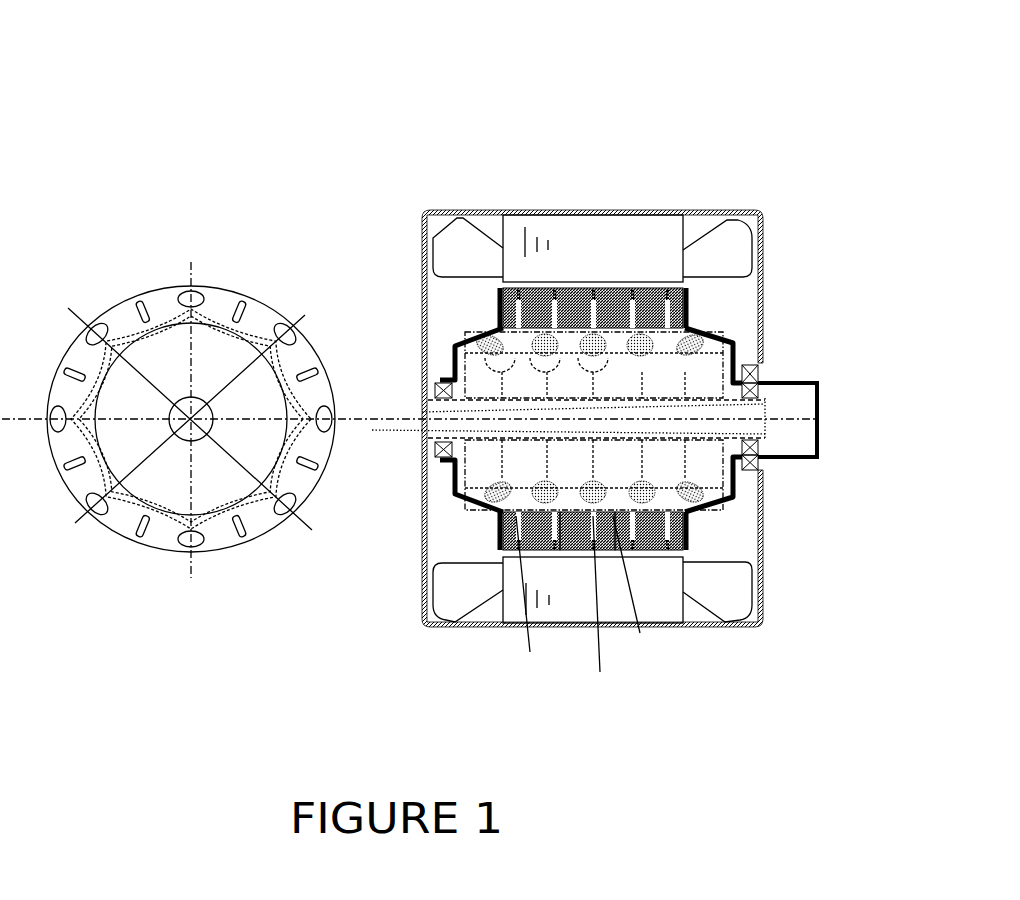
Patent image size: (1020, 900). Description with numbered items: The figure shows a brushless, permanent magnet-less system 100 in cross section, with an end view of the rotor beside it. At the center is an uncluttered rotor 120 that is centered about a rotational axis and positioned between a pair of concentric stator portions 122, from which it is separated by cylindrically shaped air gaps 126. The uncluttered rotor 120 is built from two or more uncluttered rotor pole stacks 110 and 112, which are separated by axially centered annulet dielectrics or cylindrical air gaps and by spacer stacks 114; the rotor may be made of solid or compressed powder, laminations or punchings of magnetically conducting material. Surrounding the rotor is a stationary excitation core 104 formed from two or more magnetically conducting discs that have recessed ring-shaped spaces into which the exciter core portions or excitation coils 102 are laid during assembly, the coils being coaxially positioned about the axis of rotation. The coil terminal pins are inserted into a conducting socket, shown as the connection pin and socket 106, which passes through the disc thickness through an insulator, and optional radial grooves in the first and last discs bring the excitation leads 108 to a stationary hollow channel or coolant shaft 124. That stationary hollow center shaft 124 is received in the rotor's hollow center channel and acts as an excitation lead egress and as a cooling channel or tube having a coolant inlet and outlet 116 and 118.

The brushless, permanent magnet-less system 100 is at (369, 67).
The exciter core portions / excitation coils 102 is at (465, 418).
The stationary excitation core 104 is at (492, 452).
The connection pin and socket 106 is at (658, 347).
The excitation leads 108 is at (420, 429).
The uncluttered rotor pole stack 110 is at (550, 675).
The uncluttered rotor pole stack 112 is at (657, 670).
The spacer stacks 114 is at (595, 702).
The coolant inlet 116 is at (420, 413).
The coolant outlet 118 is at (425, 428).
The uncluttered rotor 120 is at (499, 309).
The concentric stator portions 122 is at (515, 233).
The stationary hollow channel or coolant shaft 124 is at (750, 423).
The cylindrically shaped air gaps 126 is at (683, 288).